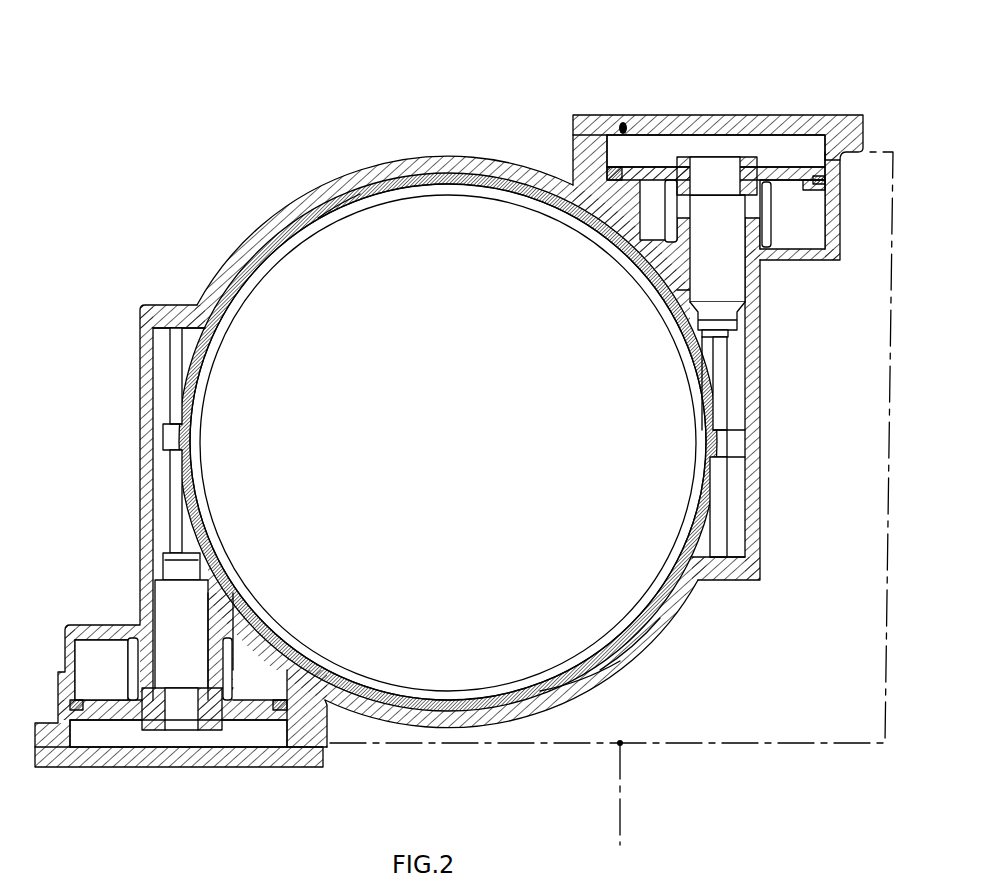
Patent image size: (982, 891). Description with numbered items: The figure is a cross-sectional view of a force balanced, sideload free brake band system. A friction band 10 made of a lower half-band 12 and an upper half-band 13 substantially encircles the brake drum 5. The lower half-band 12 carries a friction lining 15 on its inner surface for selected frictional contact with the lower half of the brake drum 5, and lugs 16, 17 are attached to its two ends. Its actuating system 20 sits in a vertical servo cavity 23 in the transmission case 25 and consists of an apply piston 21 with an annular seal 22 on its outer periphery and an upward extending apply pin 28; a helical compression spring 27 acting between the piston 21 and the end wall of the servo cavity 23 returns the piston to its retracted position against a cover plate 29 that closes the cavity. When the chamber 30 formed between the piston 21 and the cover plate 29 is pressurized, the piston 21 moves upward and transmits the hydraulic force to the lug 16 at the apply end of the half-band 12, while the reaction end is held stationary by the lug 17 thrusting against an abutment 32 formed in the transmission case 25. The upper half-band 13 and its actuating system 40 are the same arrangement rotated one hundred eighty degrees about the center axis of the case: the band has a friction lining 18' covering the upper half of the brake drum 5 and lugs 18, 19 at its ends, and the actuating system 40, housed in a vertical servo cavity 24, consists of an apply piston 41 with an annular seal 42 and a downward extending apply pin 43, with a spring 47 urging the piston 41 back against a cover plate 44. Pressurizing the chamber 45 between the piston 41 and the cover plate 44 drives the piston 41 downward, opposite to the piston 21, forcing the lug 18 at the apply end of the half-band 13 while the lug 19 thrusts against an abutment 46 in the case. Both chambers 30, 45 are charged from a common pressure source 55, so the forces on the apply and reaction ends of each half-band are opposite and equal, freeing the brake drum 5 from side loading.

The brake drum 5 is at (229, 315).
The friction band 10 is at (392, 162).
The lower half-band 12 is at (595, 656).
The upper half-band 13 is at (258, 263).
The friction lining 15 is at (640, 625).
The lug 16 is at (177, 485).
The lug 17 is at (716, 514).
The lug 18 is at (770, 397).
The friction lining 18' is at (343, 245).
The lug 19 is at (180, 371).
The actuating system 20 is at (92, 792).
The apply piston 21 is at (247, 730).
The annular seal 22 is at (323, 727).
The servo cavity 23 is at (103, 652).
The servo cavity 24 is at (797, 233).
The transmission case 25 is at (258, 236).
The helical compression spring 27 is at (230, 663).
The apply pin 28 is at (192, 590).
The cover plate 29 is at (155, 760).
The chamber 30 is at (206, 740).
The abutment 32 is at (727, 553).
The actuating system 40 is at (798, 90).
The apply piston 41 is at (650, 163).
The annular seal 42 is at (611, 178).
The apply pin 43 is at (706, 291).
The cover plate 44 is at (742, 114).
The chamber 45 is at (692, 144).
The abutment 46 is at (173, 341).
The spring 47 is at (668, 215).
The common pressure source 55 is at (616, 786).